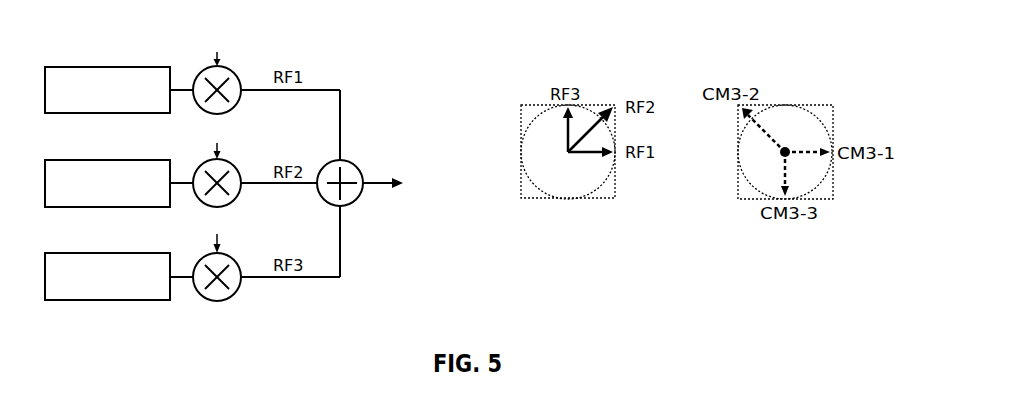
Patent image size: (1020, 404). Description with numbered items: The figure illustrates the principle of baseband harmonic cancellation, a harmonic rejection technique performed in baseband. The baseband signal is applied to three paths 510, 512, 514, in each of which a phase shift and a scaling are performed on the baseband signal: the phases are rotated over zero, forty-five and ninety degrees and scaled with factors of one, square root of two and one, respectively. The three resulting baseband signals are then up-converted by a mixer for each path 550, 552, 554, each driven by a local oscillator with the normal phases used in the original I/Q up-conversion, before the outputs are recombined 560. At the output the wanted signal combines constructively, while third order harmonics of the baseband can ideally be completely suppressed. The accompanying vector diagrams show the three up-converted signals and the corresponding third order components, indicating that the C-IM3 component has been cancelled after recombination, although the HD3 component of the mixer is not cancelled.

The first path 510 is at (95, 65).
The second path 512 is at (97, 158).
The third path 514 is at (102, 252).
The mixer 550 is at (235, 72).
The mixer 552 is at (235, 164).
The mixer 554 is at (238, 263).
The recombination 560 is at (360, 163).